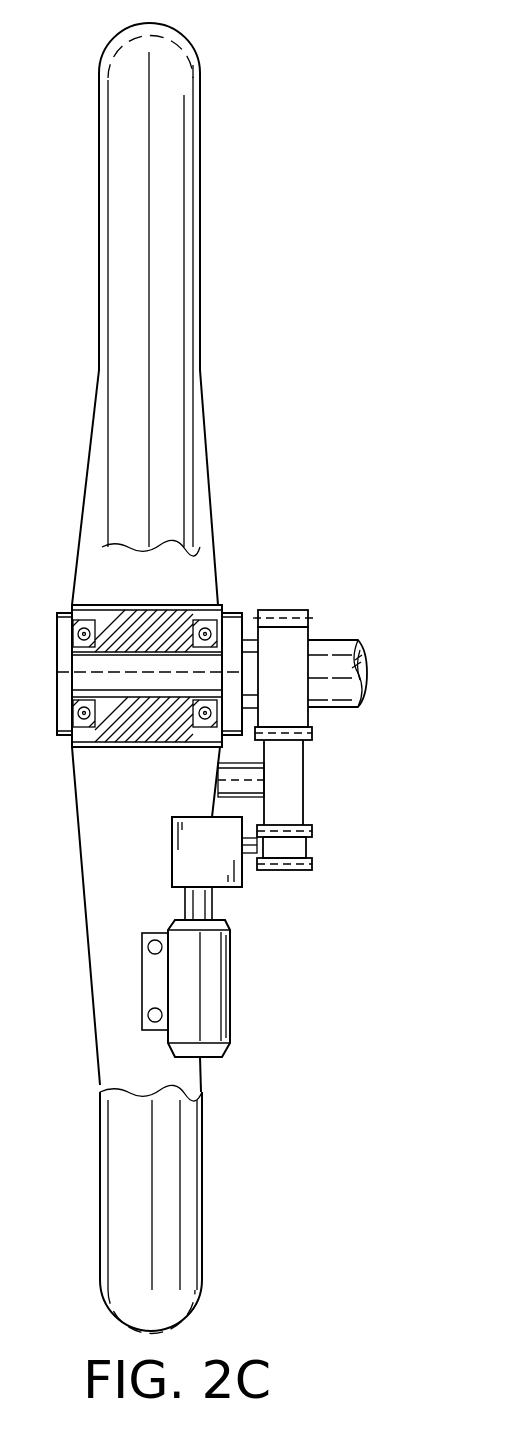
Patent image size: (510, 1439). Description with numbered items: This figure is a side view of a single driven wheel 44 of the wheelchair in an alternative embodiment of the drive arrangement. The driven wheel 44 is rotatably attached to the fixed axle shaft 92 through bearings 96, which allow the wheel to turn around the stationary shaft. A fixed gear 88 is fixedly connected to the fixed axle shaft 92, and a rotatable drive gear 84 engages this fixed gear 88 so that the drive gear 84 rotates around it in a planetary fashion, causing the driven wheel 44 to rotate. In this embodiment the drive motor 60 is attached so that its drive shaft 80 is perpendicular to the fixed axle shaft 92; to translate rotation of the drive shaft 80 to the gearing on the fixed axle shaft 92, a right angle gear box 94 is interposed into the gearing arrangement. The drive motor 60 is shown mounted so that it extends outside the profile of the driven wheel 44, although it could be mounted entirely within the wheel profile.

The driven wheel 44 is at (200, 294).
The bearings 96 is at (206, 620).
The fixed gear 88 is at (286, 610).
The fixed axle shaft 92 is at (326, 640).
The rotatable drive gear 84 is at (296, 791).
The right angle gear box 94 is at (243, 873).
The drive shaft 80 is at (212, 903).
The drive motor 60 is at (230, 993).